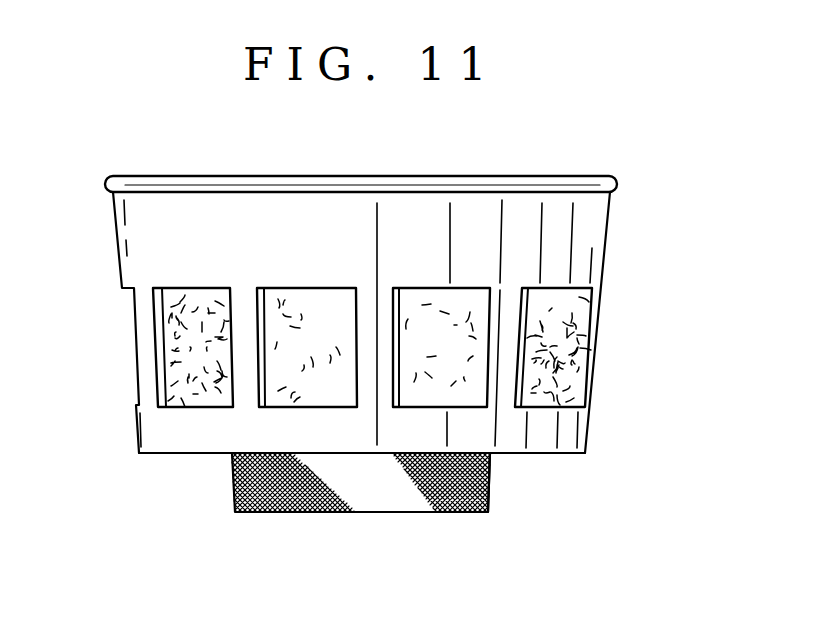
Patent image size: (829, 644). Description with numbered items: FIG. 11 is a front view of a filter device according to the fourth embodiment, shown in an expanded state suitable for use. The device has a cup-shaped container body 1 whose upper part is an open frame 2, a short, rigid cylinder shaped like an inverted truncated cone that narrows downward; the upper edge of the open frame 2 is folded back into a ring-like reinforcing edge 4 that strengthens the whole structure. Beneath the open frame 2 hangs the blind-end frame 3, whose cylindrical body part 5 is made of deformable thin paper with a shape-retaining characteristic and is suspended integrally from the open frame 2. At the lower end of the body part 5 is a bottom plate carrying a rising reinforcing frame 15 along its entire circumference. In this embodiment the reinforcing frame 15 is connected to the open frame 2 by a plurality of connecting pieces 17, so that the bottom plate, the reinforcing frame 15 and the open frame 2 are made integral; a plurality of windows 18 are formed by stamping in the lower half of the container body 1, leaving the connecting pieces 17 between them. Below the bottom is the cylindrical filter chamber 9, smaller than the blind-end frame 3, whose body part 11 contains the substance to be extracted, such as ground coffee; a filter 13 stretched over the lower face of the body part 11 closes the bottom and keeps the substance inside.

The container body 1 is at (623, 251).
The open frame 2 is at (597, 268).
The blind-end frame 3 is at (587, 420).
The reinforcing edge 4 is at (448, 180).
The body part 5 is at (277, 382).
The filter chamber 9 is at (229, 509).
The body part of the filter chamber 11 is at (493, 480).
The filter 13 is at (435, 514).
The reinforcing frame 15 is at (563, 456).
The connecting pieces 17 is at (240, 304).
The windows 18 is at (437, 292).